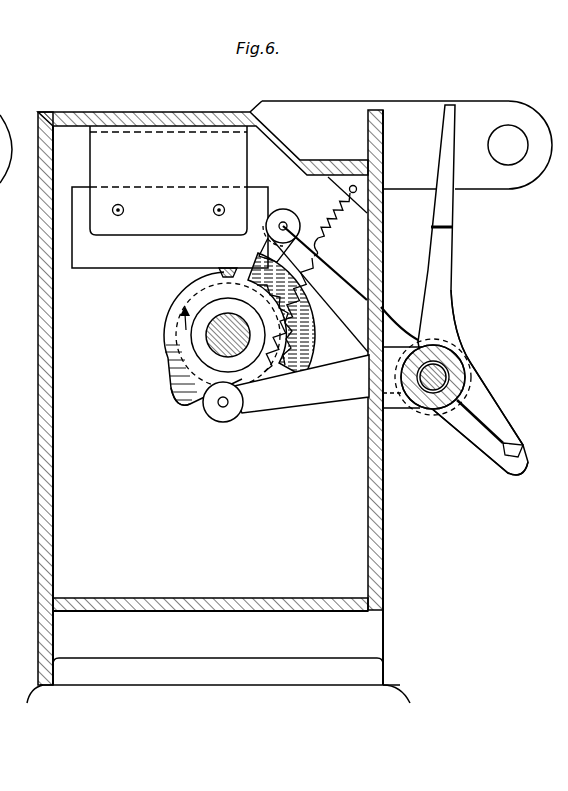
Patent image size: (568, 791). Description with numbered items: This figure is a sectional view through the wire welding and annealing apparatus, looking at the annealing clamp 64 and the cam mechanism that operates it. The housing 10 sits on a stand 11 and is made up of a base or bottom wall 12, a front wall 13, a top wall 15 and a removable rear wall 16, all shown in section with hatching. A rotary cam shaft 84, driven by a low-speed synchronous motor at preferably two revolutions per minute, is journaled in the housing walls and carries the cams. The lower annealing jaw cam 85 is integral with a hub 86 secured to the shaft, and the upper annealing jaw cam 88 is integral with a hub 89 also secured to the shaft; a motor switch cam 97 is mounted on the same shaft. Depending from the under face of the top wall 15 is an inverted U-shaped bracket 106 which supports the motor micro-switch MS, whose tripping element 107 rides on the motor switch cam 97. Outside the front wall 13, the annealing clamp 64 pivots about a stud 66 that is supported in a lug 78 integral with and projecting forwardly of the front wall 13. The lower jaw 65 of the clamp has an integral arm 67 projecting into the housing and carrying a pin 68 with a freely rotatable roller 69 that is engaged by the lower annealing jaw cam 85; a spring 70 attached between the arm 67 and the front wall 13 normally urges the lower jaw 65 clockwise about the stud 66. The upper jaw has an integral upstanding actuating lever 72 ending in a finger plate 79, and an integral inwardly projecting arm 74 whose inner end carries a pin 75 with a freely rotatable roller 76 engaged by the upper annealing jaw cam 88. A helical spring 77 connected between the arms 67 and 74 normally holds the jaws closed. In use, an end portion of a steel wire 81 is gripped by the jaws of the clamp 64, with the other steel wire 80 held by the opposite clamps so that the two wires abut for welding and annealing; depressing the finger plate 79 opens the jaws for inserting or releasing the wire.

The housing 10 is at (203, 111).
The stand 11 is at (402, 688).
The base or bottom wall 12 is at (233, 600).
The front wall 13 is at (376, 258).
The top wall 15 is at (123, 122).
The removable rear wall 16 is at (47, 250).
The annealing clamp 64 is at (468, 345).
The lower jaw 65 is at (490, 454).
The stud 66 is at (447, 378).
The arm 67 is at (387, 332).
The pin 68 is at (297, 232).
The roller 69 is at (285, 214).
The spring 70 is at (330, 222).
The actuating lever 72 is at (438, 263).
The arm 74 is at (337, 396).
The pin 75 is at (223, 408).
The roller 76 is at (213, 412).
The helical spring 77 is at (286, 312).
The lug 78 is at (403, 405).
The finger plate 79 is at (446, 210).
The steel wire 80 is at (10, 281).
The steel wire 81 is at (512, 444).
The rotary cam shaft 84 is at (216, 326).
The lower annealing jaw cam 85 is at (316, 348).
The hub 86 is at (193, 342).
The upper annealing jaw cam 88 is at (170, 386).
The hub 89 is at (205, 362).
The motor switch cam 97 is at (170, 364).
The inverted U-shaped bracket 106 is at (100, 162).
The tripping element 107 is at (224, 268).
The motor micro-switch MS is at (101, 256).